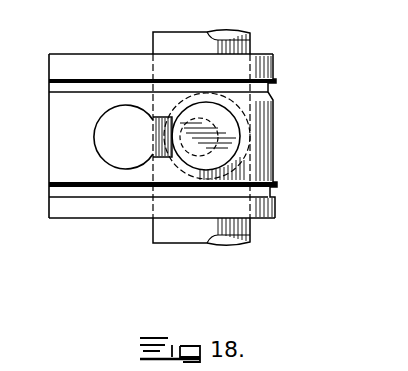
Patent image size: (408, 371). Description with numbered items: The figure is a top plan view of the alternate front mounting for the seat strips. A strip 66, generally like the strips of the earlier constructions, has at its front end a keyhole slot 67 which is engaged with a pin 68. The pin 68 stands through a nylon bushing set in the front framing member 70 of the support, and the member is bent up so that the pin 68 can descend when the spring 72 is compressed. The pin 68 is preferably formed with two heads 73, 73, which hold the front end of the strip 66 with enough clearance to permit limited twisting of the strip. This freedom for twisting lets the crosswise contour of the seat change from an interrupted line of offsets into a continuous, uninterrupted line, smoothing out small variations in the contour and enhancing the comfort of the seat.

The strip 66 is at (48, 153).
The keyhole slot 67 is at (108, 160).
The pin 68 is at (252, 157).
The front framing member 70 is at (252, 46).
The spring 72 is at (277, 100).
The head 73 is at (246, 133).